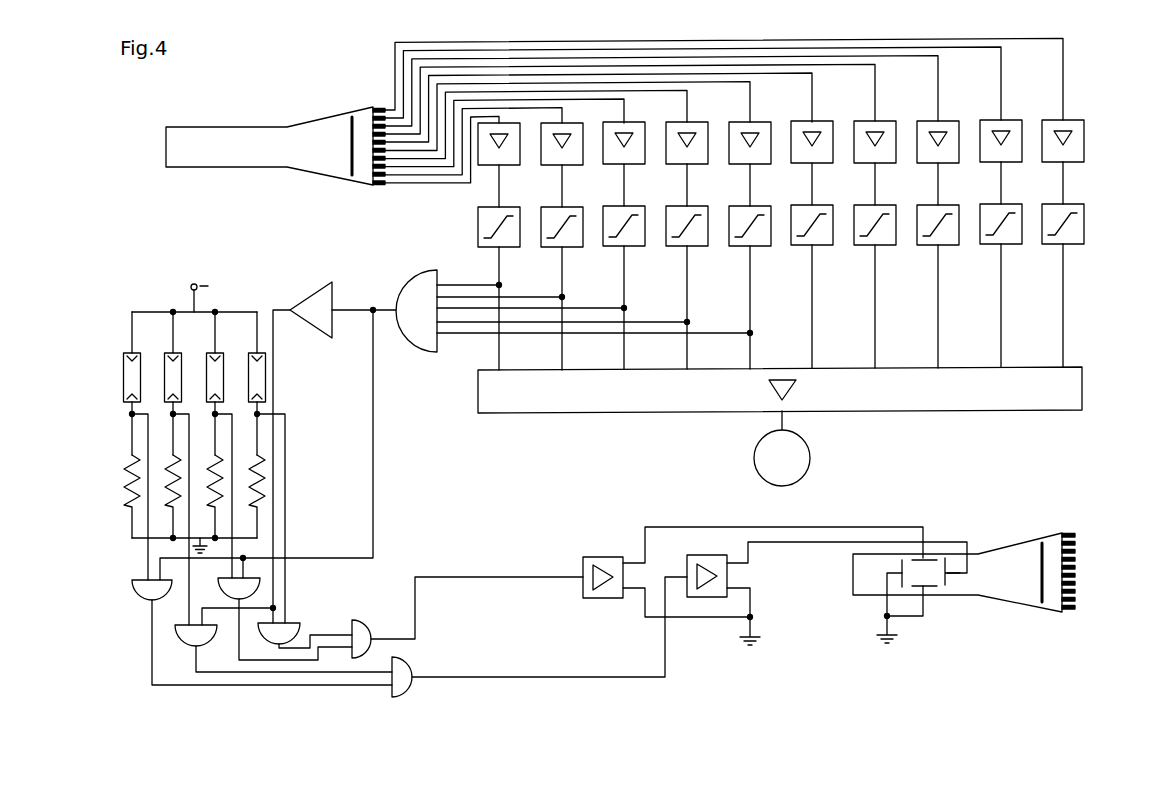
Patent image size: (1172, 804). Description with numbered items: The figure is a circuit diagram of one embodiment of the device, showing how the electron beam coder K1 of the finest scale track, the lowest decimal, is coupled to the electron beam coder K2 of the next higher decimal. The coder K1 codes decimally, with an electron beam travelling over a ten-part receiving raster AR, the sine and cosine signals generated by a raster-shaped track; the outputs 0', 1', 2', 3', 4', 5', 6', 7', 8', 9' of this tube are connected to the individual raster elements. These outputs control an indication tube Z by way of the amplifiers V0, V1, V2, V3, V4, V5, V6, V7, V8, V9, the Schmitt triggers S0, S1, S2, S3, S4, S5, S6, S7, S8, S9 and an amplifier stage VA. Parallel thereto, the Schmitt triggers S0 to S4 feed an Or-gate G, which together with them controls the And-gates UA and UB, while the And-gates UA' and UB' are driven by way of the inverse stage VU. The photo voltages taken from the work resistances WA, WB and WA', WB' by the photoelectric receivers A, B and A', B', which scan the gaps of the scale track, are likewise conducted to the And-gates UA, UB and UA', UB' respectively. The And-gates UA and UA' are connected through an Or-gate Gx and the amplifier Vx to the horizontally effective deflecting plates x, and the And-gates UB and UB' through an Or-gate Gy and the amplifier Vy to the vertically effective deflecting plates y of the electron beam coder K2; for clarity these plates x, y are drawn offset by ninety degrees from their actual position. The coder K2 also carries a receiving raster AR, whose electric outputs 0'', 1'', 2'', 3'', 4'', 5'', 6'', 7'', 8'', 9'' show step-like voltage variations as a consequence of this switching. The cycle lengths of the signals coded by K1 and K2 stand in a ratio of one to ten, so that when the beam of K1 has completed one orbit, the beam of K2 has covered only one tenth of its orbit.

The electron beam coder K1 is at (210, 138).
The receiving raster AR is at (350, 150).
The output 0' is at (718, 66).
The output 1' is at (674, 70).
The output 2' is at (629, 82).
The output 3' is at (579, 90).
The output 4' is at (535, 105).
The output 5' is at (497, 117).
The output 6' is at (495, 150).
The output 7' is at (473, 158).
The output 8' is at (452, 170).
The output 9' is at (434, 179).
The amplifier V0 is at (507, 167).
The amplifier V1 is at (570, 167).
The amplifier V2 is at (632, 166).
The amplifier V3 is at (695, 166).
The amplifier V4 is at (758, 166).
The amplifier V5 is at (820, 165).
The amplifier V6 is at (883, 165).
The amplifier V7 is at (946, 165).
The amplifier V8 is at (1009, 164).
The amplifier V9 is at (1071, 164).
The Schmitt trigger S0 is at (507, 249).
The Schmitt trigger S1 is at (570, 249).
The Schmitt trigger S2 is at (632, 248).
The Schmitt trigger S3 is at (695, 248).
The Schmitt trigger S4 is at (758, 248).
The Schmitt trigger S5 is at (820, 247).
The Schmitt trigger S6 is at (883, 247).
The Schmitt trigger S7 is at (946, 247).
The Schmitt trigger S8 is at (1009, 246).
The Schmitt trigger S9 is at (1071, 246).
The amplifier stage VA is at (520, 403).
The indication tube Z is at (766, 458).
The Or-gate G is at (414, 280).
The inverse stage VU is at (320, 300).
The photoelectric receiver A is at (118, 383).
The photoelectric receiver A' is at (161, 383).
The photoelectric receiver B is at (204, 383).
The photoelectric receiver B' is at (246, 383).
The work resistance WA is at (122, 496).
The work resistance WA' is at (141, 519).
The work resistance WB is at (267, 495).
The work resistance WB' is at (291, 518).
The And-gate UA is at (246, 631).
The And-gate UA' is at (246, 648).
The And-gate UB is at (285, 615).
The And-gate UB' is at (305, 625).
The Or-gate Gy is at (364, 628).
The Or-gate Gx is at (413, 674).
The amplifier Vy is at (588, 557).
The amplifier Vx is at (690, 564).
The horizontally effective deflecting plates x is at (900, 563).
The vertically effective deflecting plates y is at (936, 558).
The electron beam coder K2 is at (1005, 592).
The electric output 0'' is at (1097, 470).
The electric output 1'' is at (1097, 488).
The electric output 2'' is at (1097, 507).
The electric output 3'' is at (1100, 527).
The electric output 4'' is at (1102, 554).
The electric output 5'' is at (1102, 574).
The electric output 6'' is at (1102, 596).
The electric output 7'' is at (1102, 612).
The electric output 8'' is at (1102, 628).
The electric output 9'' is at (1090, 644).